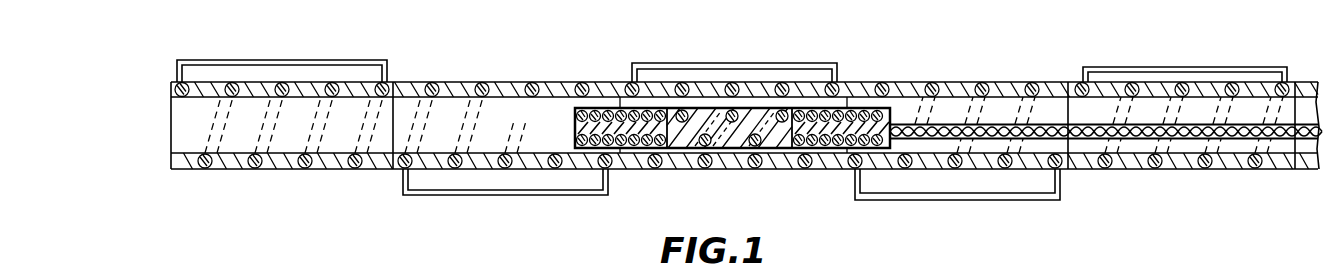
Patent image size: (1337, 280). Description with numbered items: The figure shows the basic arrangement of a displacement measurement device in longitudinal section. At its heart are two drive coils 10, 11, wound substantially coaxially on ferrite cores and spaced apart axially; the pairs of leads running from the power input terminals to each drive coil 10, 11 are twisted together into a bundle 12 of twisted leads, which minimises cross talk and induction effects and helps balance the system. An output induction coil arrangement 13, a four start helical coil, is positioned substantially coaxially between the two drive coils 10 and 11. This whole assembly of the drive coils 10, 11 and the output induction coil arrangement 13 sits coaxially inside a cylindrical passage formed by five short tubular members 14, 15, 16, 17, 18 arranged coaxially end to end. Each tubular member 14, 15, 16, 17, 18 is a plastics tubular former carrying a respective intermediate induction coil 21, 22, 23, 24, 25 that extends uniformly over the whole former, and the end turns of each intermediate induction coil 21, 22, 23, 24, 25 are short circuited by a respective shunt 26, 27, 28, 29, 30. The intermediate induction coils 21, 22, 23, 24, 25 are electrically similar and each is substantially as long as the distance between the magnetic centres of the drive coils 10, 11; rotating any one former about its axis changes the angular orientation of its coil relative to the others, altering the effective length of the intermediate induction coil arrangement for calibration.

The drive coil 10 is at (862, 108).
The drive coil 11 is at (597, 108).
The bundle of twisted leads 12 is at (1200, 141).
The output induction coil arrangement 13 is at (752, 146).
The tubular member 14 is at (278, 168).
The tubular member 15 is at (459, 89).
The tubular member 16 is at (638, 168).
The tubular member 17 is at (1000, 91).
The tubular member 18 is at (1241, 170).
The intermediate induction coil 21 is at (355, 168).
The intermediate induction coil 22 is at (532, 87).
The intermediate induction coil 23 is at (806, 168).
The intermediate induction coil 24 is at (935, 91).
The intermediate induction coil 25 is at (1104, 170).
The shunt 26 is at (277, 60).
The shunt 27 is at (506, 195).
The shunt 28 is at (743, 63).
The shunt 29 is at (969, 200).
The shunt 30 is at (1180, 67).